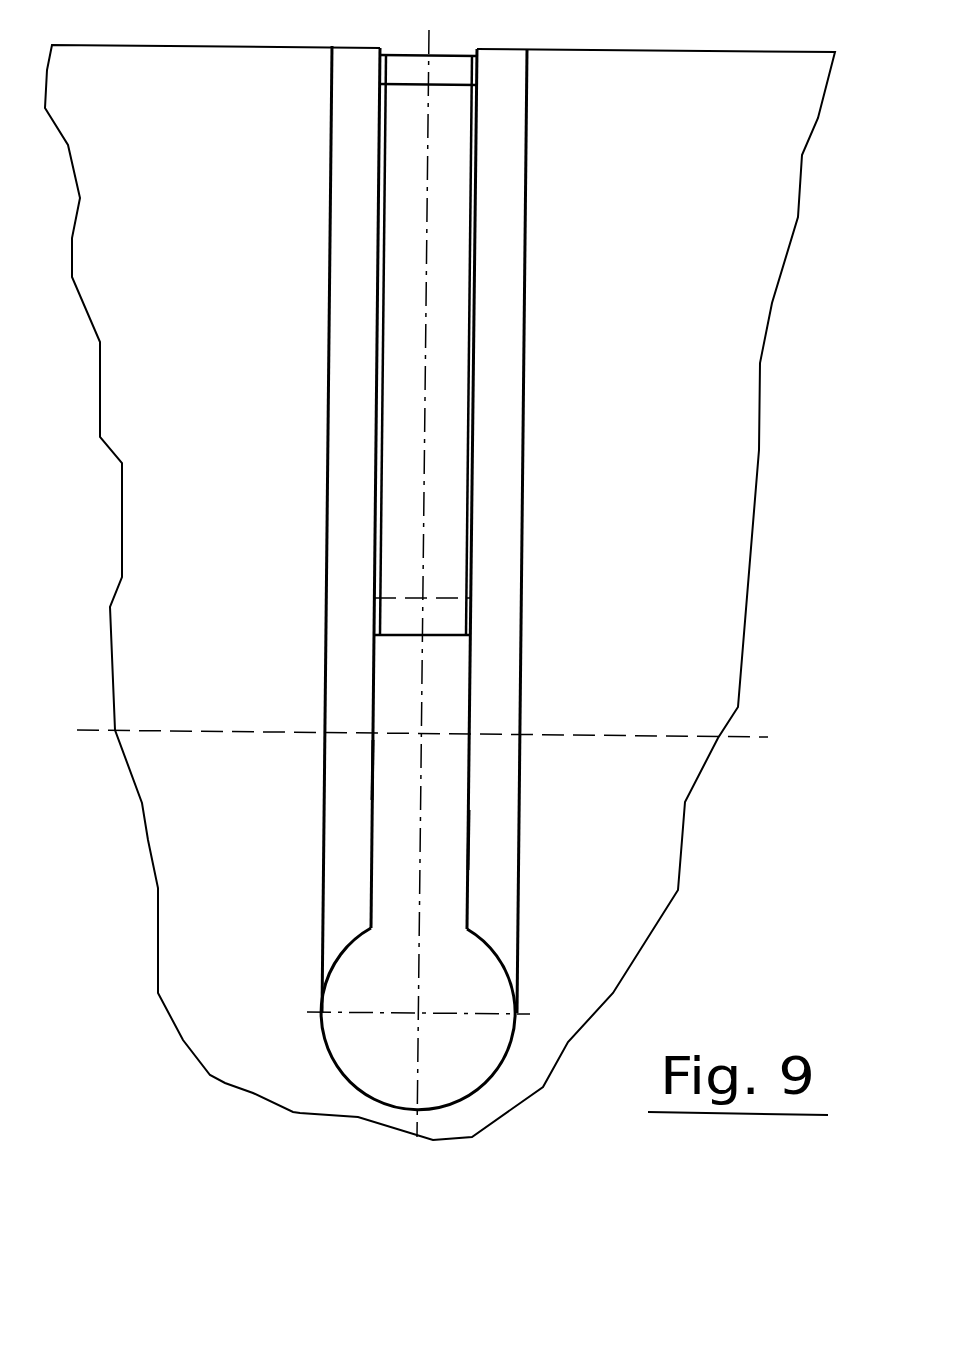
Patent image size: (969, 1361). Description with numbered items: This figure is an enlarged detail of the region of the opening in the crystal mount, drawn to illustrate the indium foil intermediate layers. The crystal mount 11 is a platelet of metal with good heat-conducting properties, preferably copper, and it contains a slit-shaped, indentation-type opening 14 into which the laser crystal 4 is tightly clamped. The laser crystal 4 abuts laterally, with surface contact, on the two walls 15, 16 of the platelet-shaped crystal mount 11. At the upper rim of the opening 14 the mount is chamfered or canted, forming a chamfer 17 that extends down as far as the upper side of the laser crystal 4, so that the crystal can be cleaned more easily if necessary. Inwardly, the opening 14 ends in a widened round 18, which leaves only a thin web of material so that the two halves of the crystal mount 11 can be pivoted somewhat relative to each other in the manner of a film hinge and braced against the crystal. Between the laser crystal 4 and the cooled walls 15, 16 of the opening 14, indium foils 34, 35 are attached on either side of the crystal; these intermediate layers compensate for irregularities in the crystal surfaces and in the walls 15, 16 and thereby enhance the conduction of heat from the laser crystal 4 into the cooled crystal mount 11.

The crystal mount 11 is at (613, 892).
The chamfer 17 is at (357, 258).
The slit-shaped opening 14 is at (447, 696).
The laser crystal 4 is at (445, 352).
The indium foil 35 is at (377, 488).
The indium foil 34 is at (472, 482).
The wall 16 is at (373, 765).
The wall 15 is at (467, 837).
The widened round 18 is at (448, 1062).